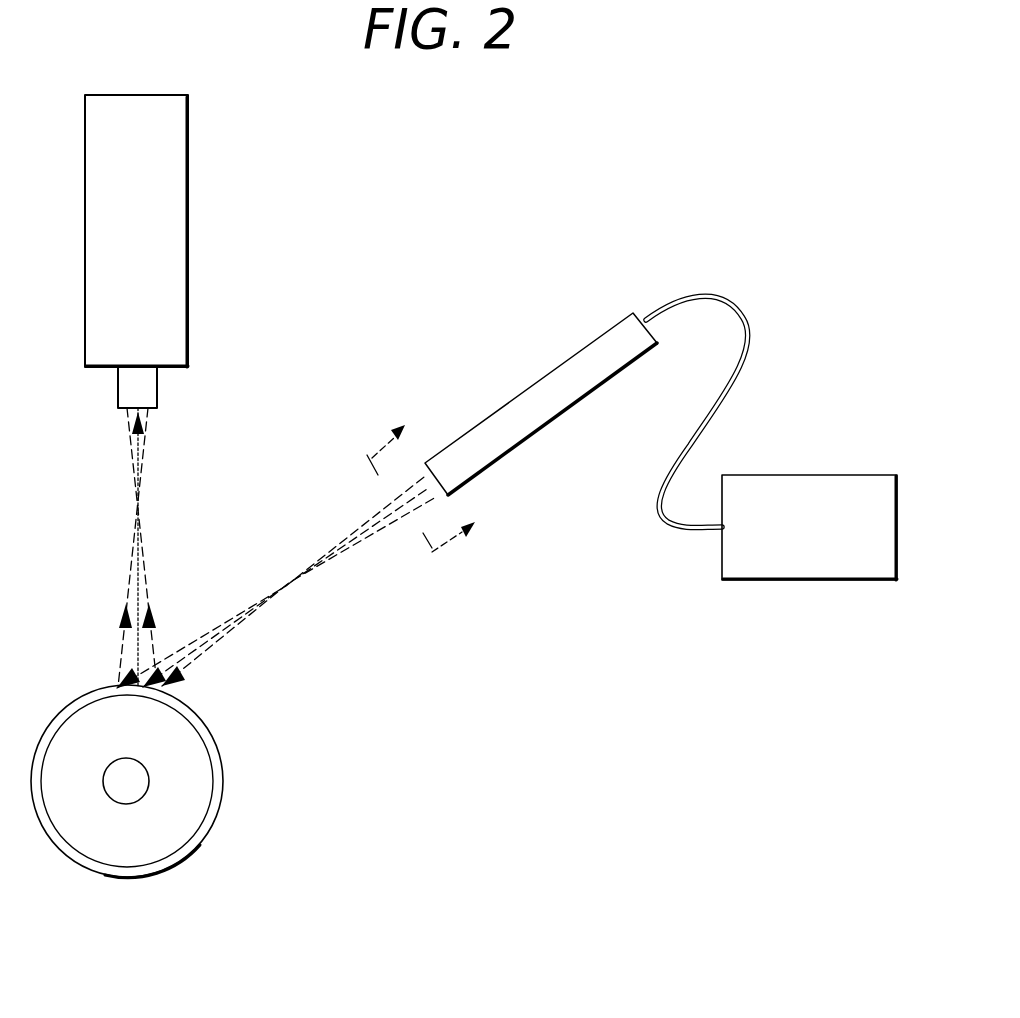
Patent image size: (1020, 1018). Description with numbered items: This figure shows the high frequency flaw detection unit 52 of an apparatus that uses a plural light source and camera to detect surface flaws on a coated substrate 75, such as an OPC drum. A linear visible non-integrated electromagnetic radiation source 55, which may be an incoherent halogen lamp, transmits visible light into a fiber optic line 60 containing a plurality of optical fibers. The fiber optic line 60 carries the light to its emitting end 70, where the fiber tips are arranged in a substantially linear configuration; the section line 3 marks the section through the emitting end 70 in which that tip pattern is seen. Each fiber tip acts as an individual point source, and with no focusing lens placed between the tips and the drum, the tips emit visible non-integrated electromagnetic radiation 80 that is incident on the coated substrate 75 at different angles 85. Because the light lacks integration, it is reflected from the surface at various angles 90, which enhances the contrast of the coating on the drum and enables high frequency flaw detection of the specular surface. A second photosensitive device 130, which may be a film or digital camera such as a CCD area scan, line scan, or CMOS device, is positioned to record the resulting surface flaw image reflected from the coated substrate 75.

The high frequency flaw detection unit 52 is at (446, 182).
The second photosensitive device 130 is at (188, 230).
The various angles 90 is at (86, 567).
The different angles 85 is at (168, 618).
The visible non-integrated electromagnetic radiation 80 is at (384, 556).
The emitting end 70 is at (530, 390).
The section line 3- 3 is at (432, 476).
The fiber optic line 60 is at (750, 340).
The linear visible non-integrated electromagnetic radiation source 55 is at (808, 473).
The coated substrate 75 is at (223, 778).